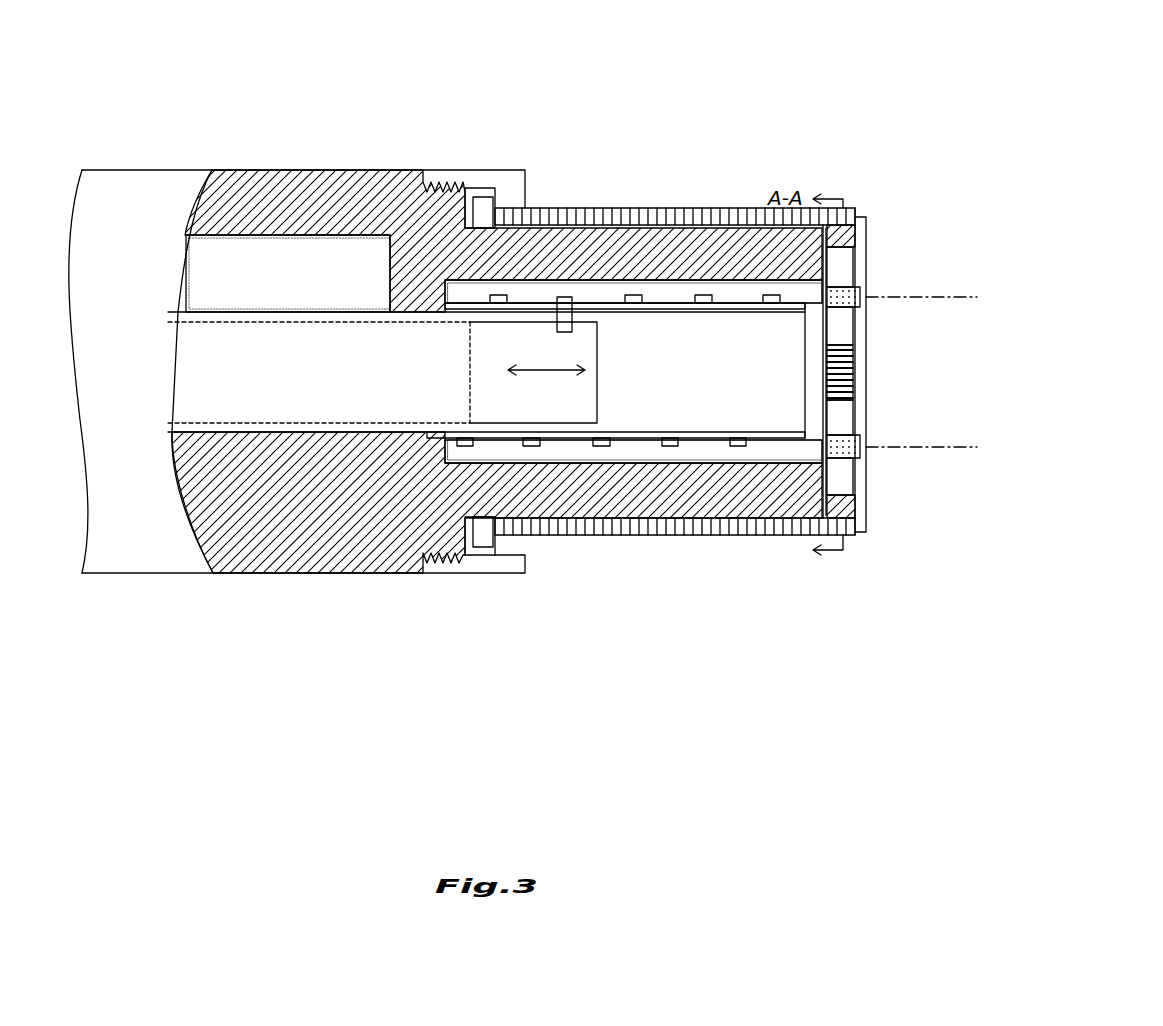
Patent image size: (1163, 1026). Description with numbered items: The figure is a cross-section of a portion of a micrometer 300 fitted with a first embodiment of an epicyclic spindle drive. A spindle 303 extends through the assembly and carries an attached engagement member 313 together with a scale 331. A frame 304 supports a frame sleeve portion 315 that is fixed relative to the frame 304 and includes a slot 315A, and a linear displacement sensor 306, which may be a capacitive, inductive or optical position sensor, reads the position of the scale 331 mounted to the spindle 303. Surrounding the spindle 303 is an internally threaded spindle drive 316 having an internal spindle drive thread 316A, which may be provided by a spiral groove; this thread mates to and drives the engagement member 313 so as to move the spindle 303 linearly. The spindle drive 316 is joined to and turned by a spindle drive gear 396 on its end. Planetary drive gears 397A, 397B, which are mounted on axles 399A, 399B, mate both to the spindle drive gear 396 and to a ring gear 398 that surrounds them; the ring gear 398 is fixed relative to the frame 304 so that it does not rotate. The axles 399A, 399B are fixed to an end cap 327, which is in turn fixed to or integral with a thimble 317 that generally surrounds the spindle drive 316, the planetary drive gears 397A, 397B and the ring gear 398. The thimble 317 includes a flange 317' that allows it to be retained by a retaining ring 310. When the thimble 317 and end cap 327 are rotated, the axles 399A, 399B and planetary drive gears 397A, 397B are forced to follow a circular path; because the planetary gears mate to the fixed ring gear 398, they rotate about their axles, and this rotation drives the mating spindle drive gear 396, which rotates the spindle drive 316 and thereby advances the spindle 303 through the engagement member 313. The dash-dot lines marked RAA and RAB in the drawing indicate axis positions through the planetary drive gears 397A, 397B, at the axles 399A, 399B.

The micrometer 300 is at (1046, 82).
The spindle 303 is at (248, 425).
The frame 304 is at (255, 198).
The linear displacement sensor 306 is at (293, 247).
The retaining ring 310 is at (482, 177).
The engagement member 313 is at (566, 297).
The frame sleeve portion 315 is at (630, 437).
The slot 315A is at (660, 310).
The spindle drive 316 is at (682, 453).
The internal spindle drive thread 316A is at (732, 442).
The thimble 317 is at (757, 344).
The flange 317' is at (548, 356).
The end cap 327 is at (860, 410).
The scale 331 is at (218, 403).
The spindle drive gear 396 is at (845, 365).
The planetary drive gear 397A is at (845, 263).
The planetary drive gear 397B is at (848, 478).
The ring gear 398 is at (867, 217).
The axle 399A is at (858, 297).
The axle 399B is at (858, 447).
The rotational axis A RAA is at (960, 297).
The rotational axis B RAB is at (960, 447).